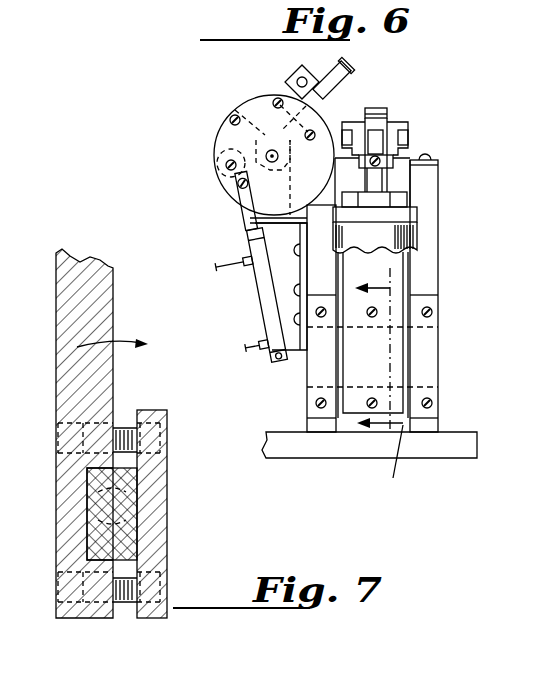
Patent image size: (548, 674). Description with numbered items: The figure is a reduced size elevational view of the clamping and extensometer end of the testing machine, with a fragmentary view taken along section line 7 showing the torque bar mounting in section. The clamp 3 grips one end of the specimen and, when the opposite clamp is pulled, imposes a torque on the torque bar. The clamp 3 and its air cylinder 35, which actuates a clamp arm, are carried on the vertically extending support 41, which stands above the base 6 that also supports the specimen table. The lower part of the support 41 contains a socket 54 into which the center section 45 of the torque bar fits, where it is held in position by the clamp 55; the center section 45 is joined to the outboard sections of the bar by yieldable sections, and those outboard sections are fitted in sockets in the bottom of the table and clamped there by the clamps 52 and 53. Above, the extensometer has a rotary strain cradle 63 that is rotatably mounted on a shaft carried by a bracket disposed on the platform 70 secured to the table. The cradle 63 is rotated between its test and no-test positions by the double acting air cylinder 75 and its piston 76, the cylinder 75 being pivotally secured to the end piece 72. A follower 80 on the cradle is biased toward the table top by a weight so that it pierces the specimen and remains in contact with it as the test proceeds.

In FIG. 6, the clamp 3 is at (408, 105).
In FIG. 6, the base 6 is at (462, 442).
In FIG. 6, the section line 7— 7 is at (378, 384).
In FIG. 6, the air cylinder 35 is at (395, 240).
In FIG. 6, the vertically extending support 41 is at (395, 268).
In FIG. 7, the vertically extending support 41 is at (93, 290).
In FIG. 7, the center section 45 is at (128, 546).
In FIG. 6, the clamp 52 is at (314, 372).
In FIG. 6, the clamp 53 is at (428, 357).
In FIG. 7, the socket 54 is at (135, 553).
In FIG. 7, the clamp 55 is at (166, 488).
In FIG. 6, the rotary strain cradle 63 is at (228, 98).
In FIG. 6, the platform 70 is at (281, 286).
In FIG. 6, the end piece 72 is at (217, 146).
In FIG. 6, the double acting air cylinder 75 is at (262, 282).
In FIG. 6, the piston 76 is at (241, 224).
In FIG. 6, the follower 80 is at (350, 78).